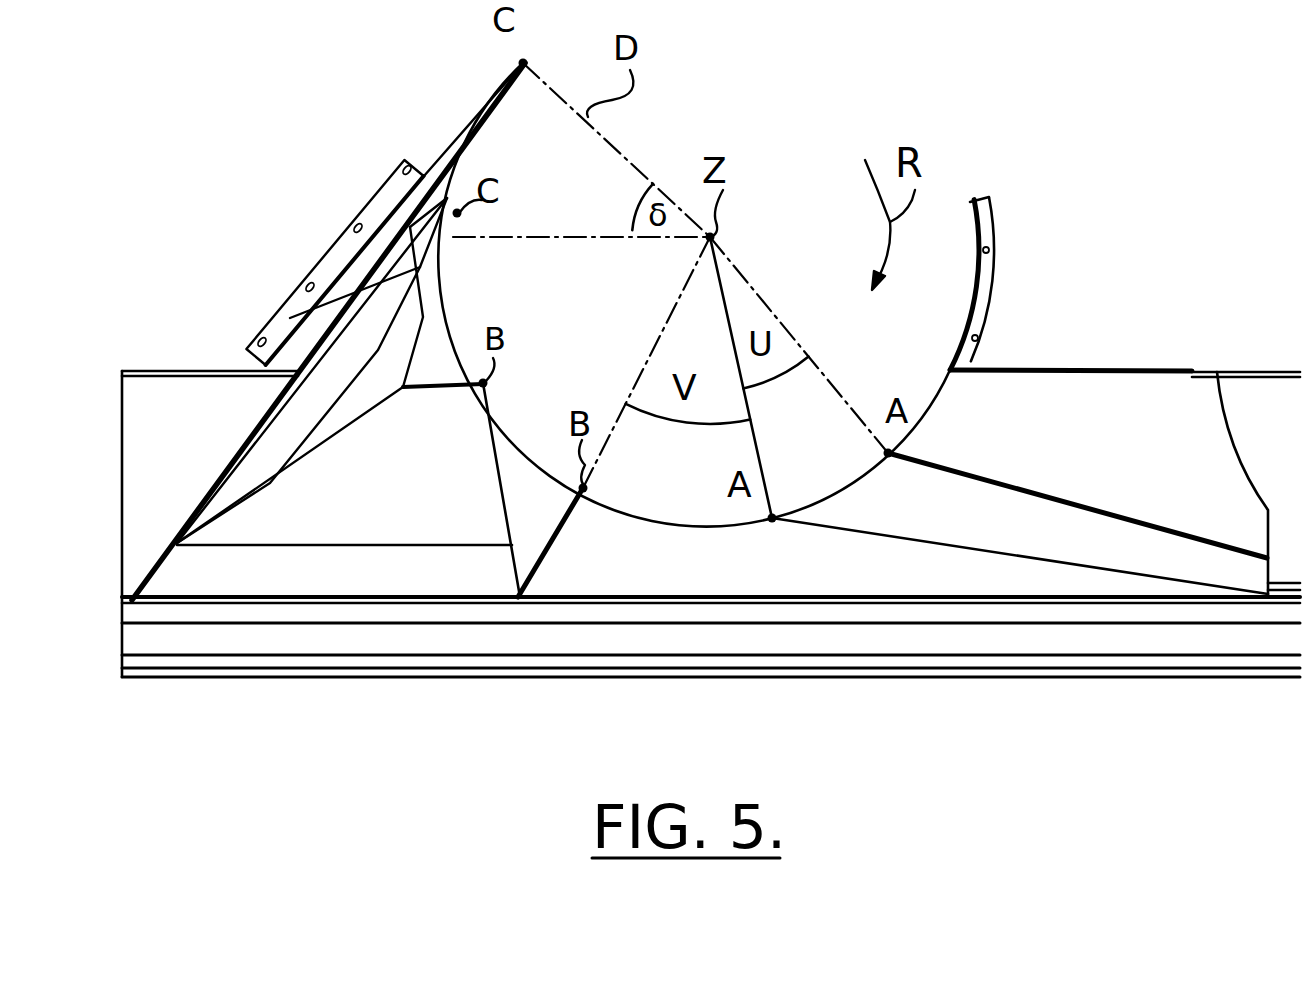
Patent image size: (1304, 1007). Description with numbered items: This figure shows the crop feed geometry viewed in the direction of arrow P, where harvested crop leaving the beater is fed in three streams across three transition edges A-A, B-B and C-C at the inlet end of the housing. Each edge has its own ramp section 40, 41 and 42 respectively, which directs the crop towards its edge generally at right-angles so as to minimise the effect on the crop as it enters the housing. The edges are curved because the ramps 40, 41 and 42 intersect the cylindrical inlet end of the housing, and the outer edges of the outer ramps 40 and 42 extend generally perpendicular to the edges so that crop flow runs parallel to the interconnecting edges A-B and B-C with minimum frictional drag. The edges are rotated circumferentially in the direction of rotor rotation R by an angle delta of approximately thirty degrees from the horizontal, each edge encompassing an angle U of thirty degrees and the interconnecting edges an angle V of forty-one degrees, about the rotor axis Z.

The ramp section 40 is at (1045, 523).
The ramp section 41 is at (537, 532).
The ramp section 42 is at (357, 342).